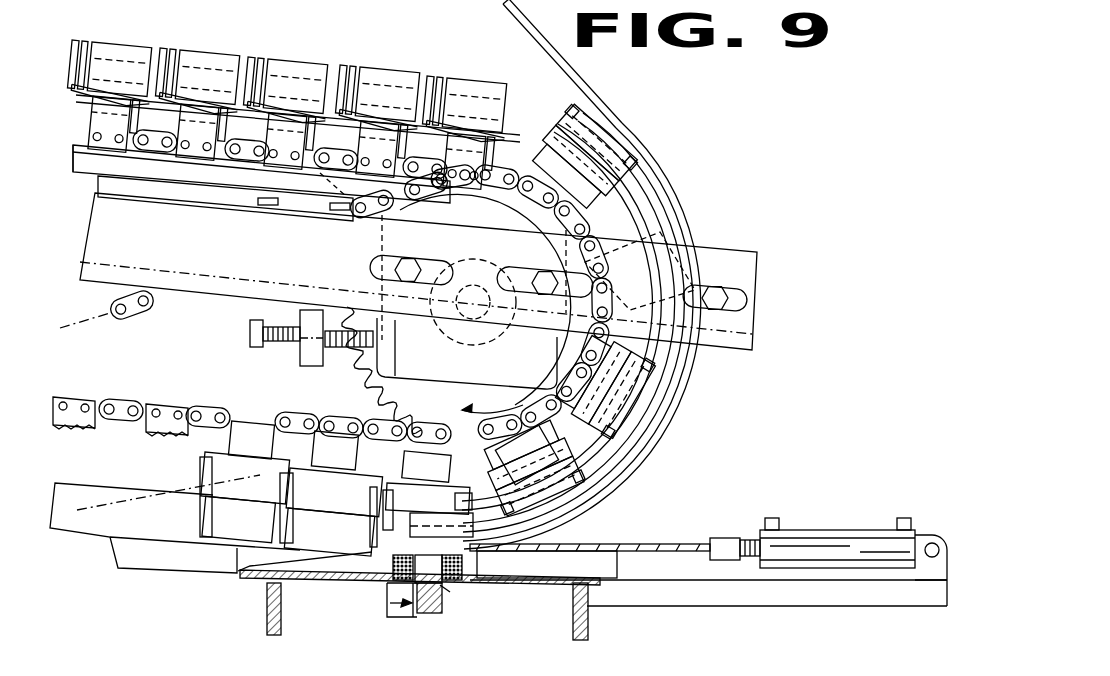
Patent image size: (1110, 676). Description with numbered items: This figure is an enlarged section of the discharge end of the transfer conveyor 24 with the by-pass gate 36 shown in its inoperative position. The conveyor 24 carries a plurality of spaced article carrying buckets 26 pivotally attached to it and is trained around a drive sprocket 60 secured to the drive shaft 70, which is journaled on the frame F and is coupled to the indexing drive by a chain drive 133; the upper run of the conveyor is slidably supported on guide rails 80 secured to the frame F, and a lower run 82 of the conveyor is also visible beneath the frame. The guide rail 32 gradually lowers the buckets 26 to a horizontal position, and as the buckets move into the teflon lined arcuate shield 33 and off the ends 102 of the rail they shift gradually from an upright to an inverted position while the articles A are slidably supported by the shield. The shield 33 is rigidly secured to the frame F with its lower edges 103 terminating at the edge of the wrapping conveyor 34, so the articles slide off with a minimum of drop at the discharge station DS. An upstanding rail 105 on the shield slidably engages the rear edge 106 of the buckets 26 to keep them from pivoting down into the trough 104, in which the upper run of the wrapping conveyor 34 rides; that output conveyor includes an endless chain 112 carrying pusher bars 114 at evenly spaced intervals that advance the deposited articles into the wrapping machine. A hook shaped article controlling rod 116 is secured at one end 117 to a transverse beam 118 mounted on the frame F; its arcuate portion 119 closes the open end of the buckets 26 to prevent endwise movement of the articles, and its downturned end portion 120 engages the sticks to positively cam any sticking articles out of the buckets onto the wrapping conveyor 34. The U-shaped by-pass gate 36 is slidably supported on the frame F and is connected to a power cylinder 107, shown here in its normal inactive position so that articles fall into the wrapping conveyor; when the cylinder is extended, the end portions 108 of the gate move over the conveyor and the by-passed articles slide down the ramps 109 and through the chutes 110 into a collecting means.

The transfer conveyor 24 is at (211, 165).
The article carrying buckets 26 is at (197, 50).
The guide rail 32 is at (162, 135).
The arcuate shield 33 is at (634, 136).
The wrapping conveyor 34 is at (370, 610).
The by-pass gate 36 is at (643, 545).
The drive sprocket 60 is at (550, 243).
The drive shaft 70 is at (470, 323).
The guide rails 80 is at (260, 180).
The lower chain run 82 is at (335, 412).
The ends of the rails 102 is at (603, 200).
The lower edges of the arcuate shields 103 is at (468, 540).
The trough 104 is at (393, 562).
The upstanding rail 105 is at (625, 470).
The rear edge of the buckets 106 is at (473, 90).
The power cylinder 107 is at (818, 537).
The end portions of the by-pass gate 108 is at (523, 543).
The ramps 109 is at (247, 573).
The chutes 110 is at (132, 568).
The endless chain 112 is at (417, 613).
The pusher bars 114 is at (437, 568).
The article controlling rod 116 is at (647, 360).
The end of the rod 117 is at (300, 205).
The transverse beam 118 is at (323, 212).
The arcuate portion of the rod 119 is at (637, 210).
The downturned end portion 120 is at (460, 500).
The chain drive 133 is at (133, 308).
The frame F is at (760, 258).
The articles A is at (370, 587).
The discharge station DS is at (452, 594).